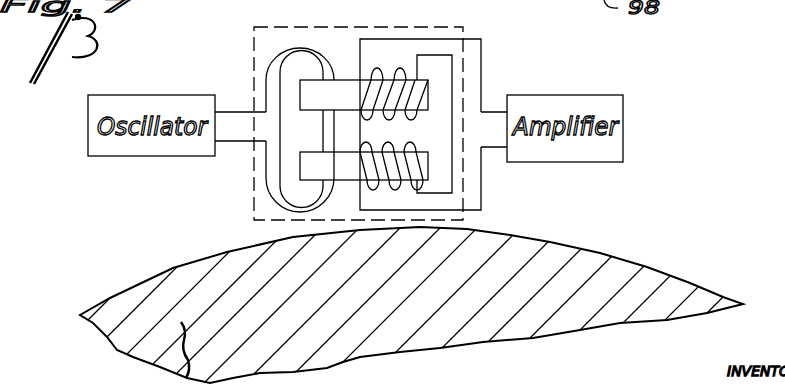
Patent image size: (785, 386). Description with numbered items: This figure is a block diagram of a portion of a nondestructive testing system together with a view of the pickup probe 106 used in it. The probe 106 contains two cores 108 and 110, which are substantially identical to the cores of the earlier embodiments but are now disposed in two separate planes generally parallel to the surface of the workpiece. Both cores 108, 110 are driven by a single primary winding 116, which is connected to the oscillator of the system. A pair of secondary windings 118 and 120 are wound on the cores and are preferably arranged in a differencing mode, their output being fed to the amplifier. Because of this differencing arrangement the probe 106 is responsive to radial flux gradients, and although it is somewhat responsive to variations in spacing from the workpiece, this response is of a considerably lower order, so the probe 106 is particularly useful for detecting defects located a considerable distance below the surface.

The probe 106 is at (467, 26).
The core 108 is at (342, 88).
The core 110 is at (313, 165).
The primary winding 116 is at (255, 78).
The secondary winding 118 is at (383, 76).
The secondary winding 120 is at (405, 187).